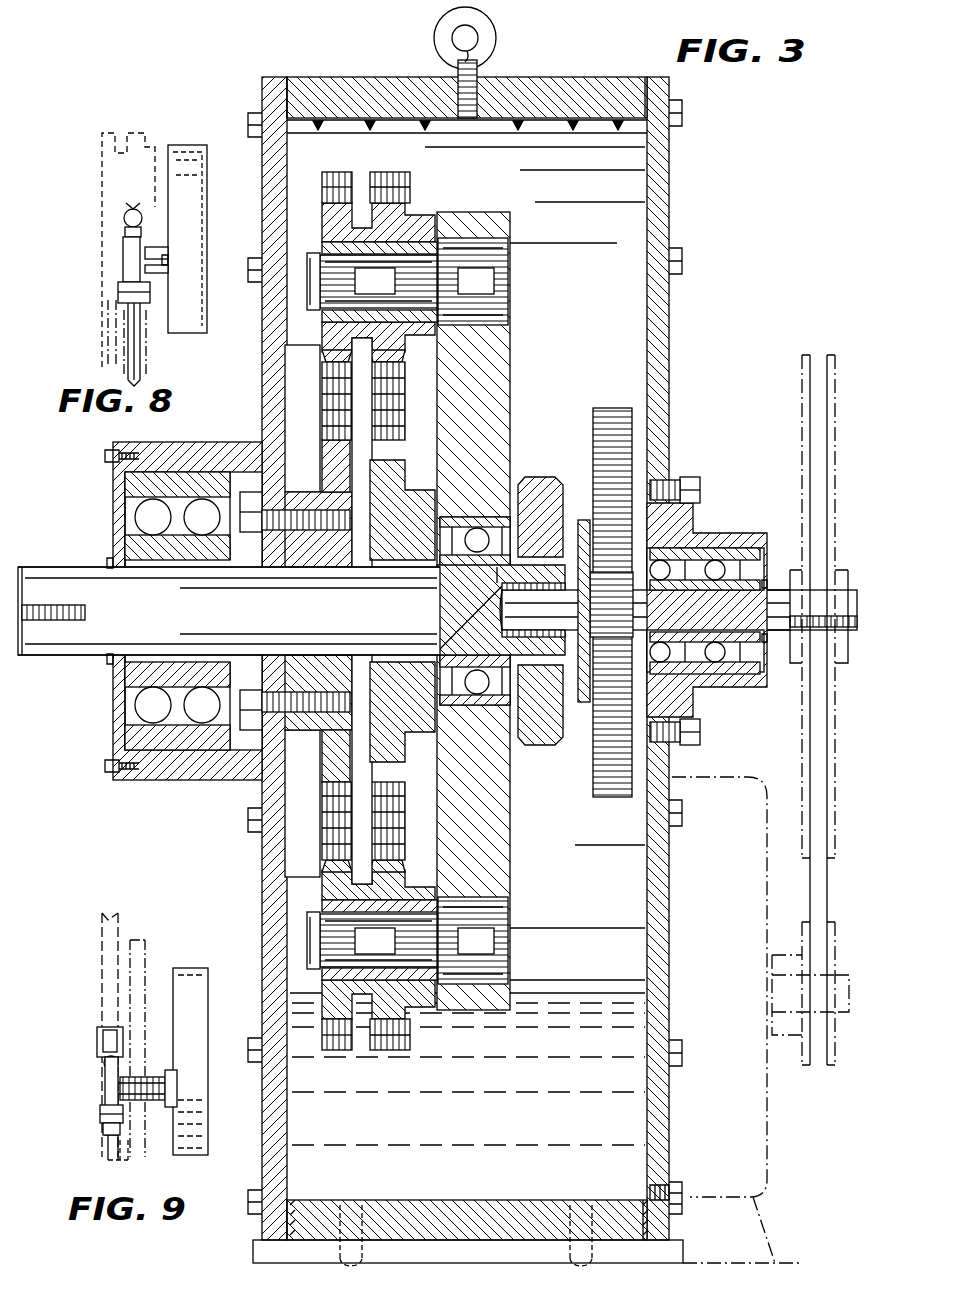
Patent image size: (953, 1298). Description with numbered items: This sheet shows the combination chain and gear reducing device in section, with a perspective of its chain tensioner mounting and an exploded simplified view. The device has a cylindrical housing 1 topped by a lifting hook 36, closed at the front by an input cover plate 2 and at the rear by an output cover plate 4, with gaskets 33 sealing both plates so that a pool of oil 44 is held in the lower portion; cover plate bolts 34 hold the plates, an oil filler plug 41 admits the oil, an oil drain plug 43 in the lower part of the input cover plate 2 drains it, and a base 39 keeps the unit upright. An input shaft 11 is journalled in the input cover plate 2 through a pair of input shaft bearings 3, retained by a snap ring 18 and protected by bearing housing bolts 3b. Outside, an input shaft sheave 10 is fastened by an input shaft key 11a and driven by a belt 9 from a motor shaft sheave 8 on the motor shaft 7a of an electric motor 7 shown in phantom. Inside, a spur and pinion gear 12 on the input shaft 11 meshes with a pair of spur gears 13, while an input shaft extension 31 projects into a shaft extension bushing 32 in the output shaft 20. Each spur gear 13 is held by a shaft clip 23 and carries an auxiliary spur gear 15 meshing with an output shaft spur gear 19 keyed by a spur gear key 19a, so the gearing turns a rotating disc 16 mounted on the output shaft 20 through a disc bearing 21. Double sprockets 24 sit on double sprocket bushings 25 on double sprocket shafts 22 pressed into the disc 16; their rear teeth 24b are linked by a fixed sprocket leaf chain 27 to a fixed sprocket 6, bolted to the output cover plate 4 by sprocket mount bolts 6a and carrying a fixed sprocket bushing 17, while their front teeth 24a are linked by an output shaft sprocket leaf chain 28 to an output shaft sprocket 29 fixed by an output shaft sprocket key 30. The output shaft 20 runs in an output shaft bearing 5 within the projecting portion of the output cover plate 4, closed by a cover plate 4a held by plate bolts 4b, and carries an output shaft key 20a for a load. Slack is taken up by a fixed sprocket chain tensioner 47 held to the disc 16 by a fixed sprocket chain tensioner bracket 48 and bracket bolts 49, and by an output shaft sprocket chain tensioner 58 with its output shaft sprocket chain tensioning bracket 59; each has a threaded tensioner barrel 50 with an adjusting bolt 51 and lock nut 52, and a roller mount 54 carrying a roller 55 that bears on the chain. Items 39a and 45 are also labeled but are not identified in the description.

In FIG. 3, the housing 1 is at (575, 62).
In FIG. 3, the input cover plate 2 is at (670, 375).
In FIG. 3, the input shaft bearings 3 is at (684, 535).
In FIG. 3, the bearing housing bolts 3b is at (702, 478).
In FIG. 3, the output cover plate 4 is at (265, 390).
In FIG. 3, the cover plate 4a is at (130, 476).
In FIG. 3, the plate bolts 4b is at (104, 455).
In FIG. 3, the output shaft bearing 5 is at (135, 492).
In FIG. 3, the fixed sprocket 6 is at (312, 488).
In FIG. 3, the sprocket mount bolts 6a is at (250, 490).
In FIG. 3, the electric motor 7 is at (768, 1180).
In FIG. 3, the motor shaft 7a is at (780, 958).
In FIG. 3, the motor shaft sheave 8 is at (805, 1068).
In FIG. 3, the belt 9 is at (805, 418).
In FIG. 3, the input shaft sheave 10 is at (802, 372).
In FIG. 3, the input shaft 11 is at (780, 588).
In FIG. 3, the input shaft key 11a is at (830, 615).
In FIG. 3, the spur and pinion gear 12 is at (612, 606).
In FIG. 3, the spur gears 13 is at (612, 406).
In FIG. 3, the auxiliary spur gear 15 is at (582, 690).
In FIG. 3, the rotating disc 16 is at (515, 355).
In FIG. 8, the rotating disc 16 is at (205, 155).
In FIG. 9, the rotating disc 16 is at (195, 1078).
In FIG. 3, the fixed sprocket bushing 17 is at (325, 652).
In FIG. 3, the snap ring 18 is at (107, 562).
In FIG. 3, the output shaft spur gear 19 is at (522, 468).
In FIG. 3, the spur gear key 19a is at (550, 720).
In FIG. 3, the output shaft 20 is at (85, 650).
In FIG. 3, the output shaft key 20a is at (50, 604).
In FIG. 3, the disc bearing 21 is at (480, 525).
In FIG. 3, the double sprocket shafts 22 is at (414, 611).
In FIG. 3, the shaft clip 23 is at (305, 325).
In FIG. 3, the double sprockets 24 is at (408, 210).
In FIG. 8, the double sprockets 24 is at (148, 147).
In FIG. 9, the double sprockets 24 is at (124, 1152).
In FIG. 3, the front teeth 24a is at (412, 178).
In FIG. 3, the rear teeth 24b is at (320, 205).
In FIG. 3, the double sprocket bushings 25 is at (422, 235).
In FIG. 3, the fixed sprocket leaf chain 27 is at (335, 172).
In FIG. 8, the fixed sprocket leaf chain 27 is at (100, 313).
In FIG. 9, the fixed sprocket leaf chain 27 is at (98, 950).
In FIG. 3, the output shaft sprocket leaf chain 28 is at (385, 172).
In FIG. 8, the output shaft sprocket leaf chain 28 is at (150, 372).
In FIG. 9, the output shaft sprocket leaf chain 28 is at (145, 965).
In FIG. 3, the output shaft sprocket 29 is at (412, 478).
In FIG. 3, the output shaft sprocket key 30 is at (412, 715).
In FIG. 3, the input shaft extension 31 is at (490, 640).
In FIG. 3, the shaft extension bushing 32 is at (483, 562).
In FIG. 3, the gaskets 33 is at (290, 88).
In FIG. 3, the cover plate bolts 34 is at (245, 125).
In FIG. 3, the lifting hook 36 is at (440, 50).
In FIG. 3, the base 39 is at (250, 1252).
In FIG. 3, the base bolt holes 39a is at (466, 1235).
In FIG. 3, the oil filler plug 41 is at (520, 75).
In FIG. 3, the oil drain plug 43 is at (685, 1185).
In FIG. 3, the oil 44 is at (468, 1074).
In FIG. 3, the cover gasket 45 is at (618, 130).
In FIG. 9, the fixed sprocket chain tensioner 47 is at (108, 1148).
In FIG. 9, the fixed sprocket chain tensioner bracket 48 is at (175, 1085).
In FIG. 8, the bracket bolts 49 is at (160, 245).
In FIG. 9, the bracket bolts 49 is at (155, 1070).
In FIG. 8, the tensioner barrel 50 is at (122, 262).
In FIG. 9, the tensioner barrel 50 is at (104, 1080).
In FIG. 8, the adjusting bolt 51 is at (123, 218).
In FIG. 9, the adjusting bolt 51 is at (103, 1130).
In FIG. 8, the lock nut 52 is at (122, 235).
In FIG. 9, the lock nut 52 is at (100, 1110).
In FIG. 8, the roller mount 54 is at (118, 288).
In FIG. 9, the roller mount 54 is at (104, 1062).
In FIG. 8, the roller 55 is at (128, 320).
In FIG. 9, the roller 55 is at (108, 1025).
In FIG. 8, the output shaft sprocket chain tensioner 58 is at (128, 205).
In FIG. 8, the output shaft sprocket chain tensioning bracket 59 is at (165, 262).